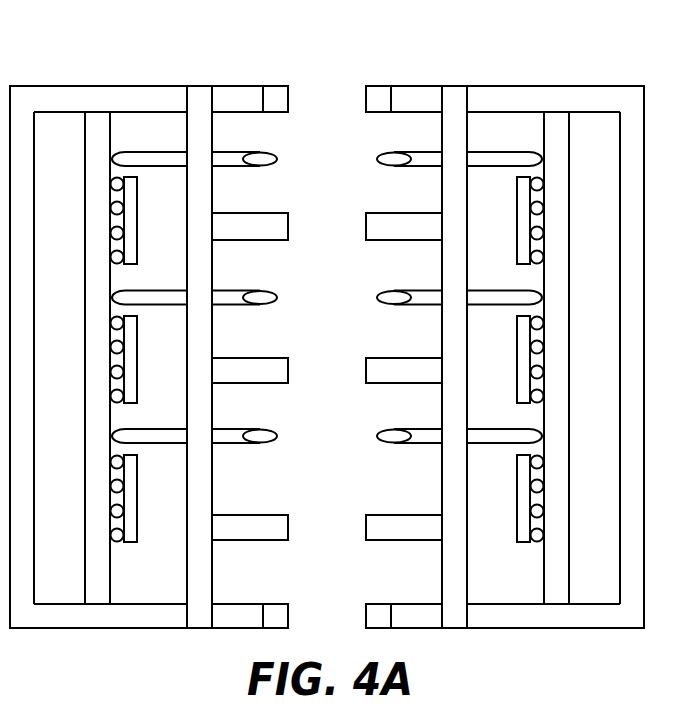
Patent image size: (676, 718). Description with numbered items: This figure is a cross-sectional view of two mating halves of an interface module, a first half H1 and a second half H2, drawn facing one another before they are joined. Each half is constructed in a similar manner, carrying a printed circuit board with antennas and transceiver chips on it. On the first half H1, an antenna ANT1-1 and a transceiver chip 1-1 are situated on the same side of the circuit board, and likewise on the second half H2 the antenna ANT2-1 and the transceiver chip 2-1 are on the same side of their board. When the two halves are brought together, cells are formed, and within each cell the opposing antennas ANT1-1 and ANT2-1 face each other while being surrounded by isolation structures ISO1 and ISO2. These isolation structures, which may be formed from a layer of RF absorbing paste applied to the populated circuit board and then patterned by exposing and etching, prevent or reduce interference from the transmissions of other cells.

The isolation structure ISO1 is at (92, 103).
The isolation structure ISO2 is at (562, 103).
The interface module half H1 is at (188, 63).
The interface module half H2 is at (466, 63).
The antenna ANT1-1 is at (235, 152).
The antenna ANT2-1 is at (423, 152).
The transceiver chip 1-1 is at (130, 198).
The transceiver chip 2-1 is at (524, 198).